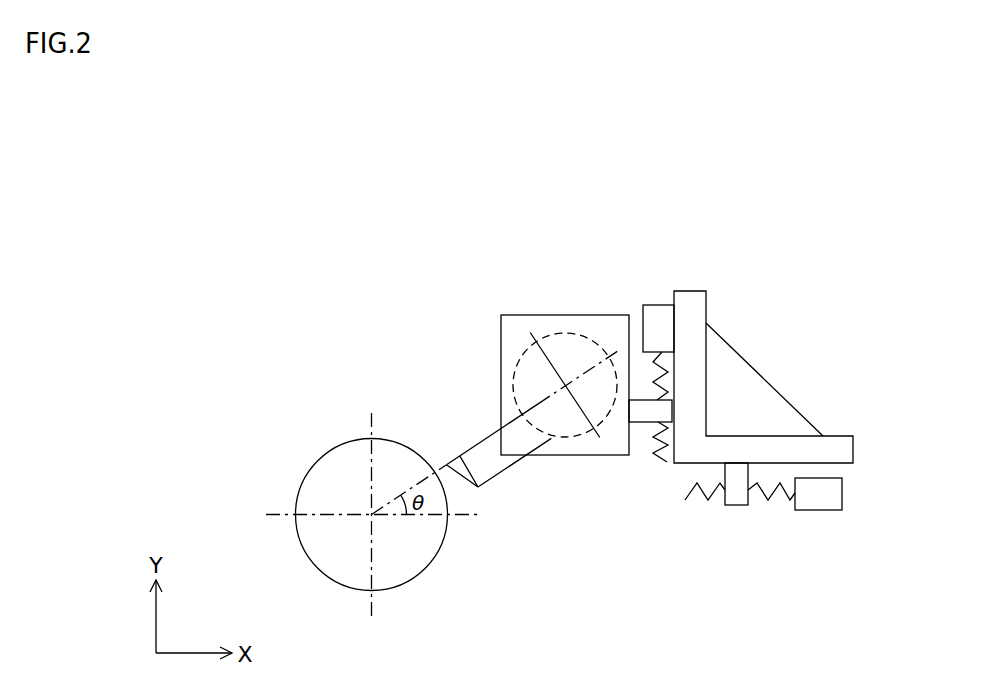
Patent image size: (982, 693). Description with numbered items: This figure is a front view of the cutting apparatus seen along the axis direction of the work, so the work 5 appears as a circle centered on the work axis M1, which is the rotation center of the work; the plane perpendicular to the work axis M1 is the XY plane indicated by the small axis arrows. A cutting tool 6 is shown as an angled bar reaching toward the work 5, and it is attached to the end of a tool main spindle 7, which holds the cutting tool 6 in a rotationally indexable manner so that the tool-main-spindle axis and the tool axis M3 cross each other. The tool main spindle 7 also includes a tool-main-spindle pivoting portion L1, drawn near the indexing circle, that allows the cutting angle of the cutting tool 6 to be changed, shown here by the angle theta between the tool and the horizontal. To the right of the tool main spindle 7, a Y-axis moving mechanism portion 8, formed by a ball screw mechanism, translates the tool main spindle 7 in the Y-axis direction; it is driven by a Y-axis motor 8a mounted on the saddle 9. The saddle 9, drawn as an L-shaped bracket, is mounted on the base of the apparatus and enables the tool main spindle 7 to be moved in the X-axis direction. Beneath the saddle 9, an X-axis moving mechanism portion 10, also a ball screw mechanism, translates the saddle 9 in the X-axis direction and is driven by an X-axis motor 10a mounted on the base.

The work 5 is at (420, 577).
The cutting tool 6 is at (470, 447).
The tool main spindle 7 is at (540, 328).
The Y-axis moving mechanism portion 8 is at (650, 463).
The Y-axis motor 8a is at (661, 305).
The saddle 9 is at (835, 432).
The X-axis moving mechanism portion 10 is at (713, 525).
The X-axis motor 10a is at (820, 510).
The work axis M1 is at (370, 513).
The tool axis M3 is at (513, 383).
The tool-main-spindle pivoting portion L1 is at (575, 440).